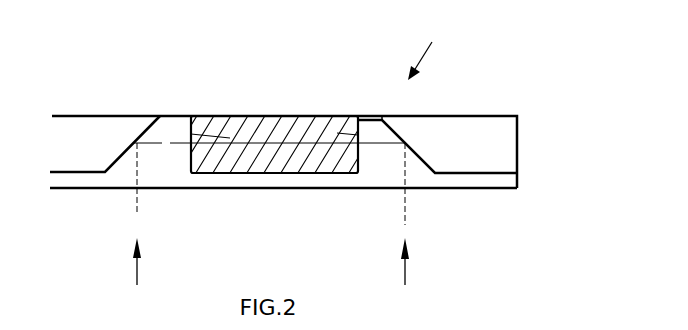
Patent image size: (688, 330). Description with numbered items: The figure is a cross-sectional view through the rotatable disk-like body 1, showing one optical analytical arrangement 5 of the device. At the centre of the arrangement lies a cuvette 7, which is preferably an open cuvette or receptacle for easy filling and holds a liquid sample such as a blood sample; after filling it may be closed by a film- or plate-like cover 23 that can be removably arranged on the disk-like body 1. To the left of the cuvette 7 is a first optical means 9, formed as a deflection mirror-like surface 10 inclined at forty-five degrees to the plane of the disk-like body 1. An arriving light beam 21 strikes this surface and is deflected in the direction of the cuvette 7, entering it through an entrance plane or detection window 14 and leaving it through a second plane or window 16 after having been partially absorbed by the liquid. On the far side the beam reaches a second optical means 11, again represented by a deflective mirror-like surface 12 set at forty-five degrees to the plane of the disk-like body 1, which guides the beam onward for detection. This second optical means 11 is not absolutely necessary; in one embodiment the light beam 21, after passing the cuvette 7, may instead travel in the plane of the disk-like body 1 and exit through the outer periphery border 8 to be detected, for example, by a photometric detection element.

The disk-like body 1 is at (488, 180).
The optical analytical arrangement 5 is at (424, 47).
The cuvette 7 is at (278, 126).
The outer periphery border 8 is at (517, 147).
The first optical means 9 is at (126, 155).
The deflection mirror-like surface 10 is at (121, 164).
The second optical means 11 is at (406, 143).
The deflective mirror-like surface 12 is at (390, 143).
The entrance plane or detection window 14 is at (230, 138).
The second plane or window 16 is at (340, 134).
The light beam 21 is at (407, 228).
The film- or plate-like cover 23 is at (382, 117).